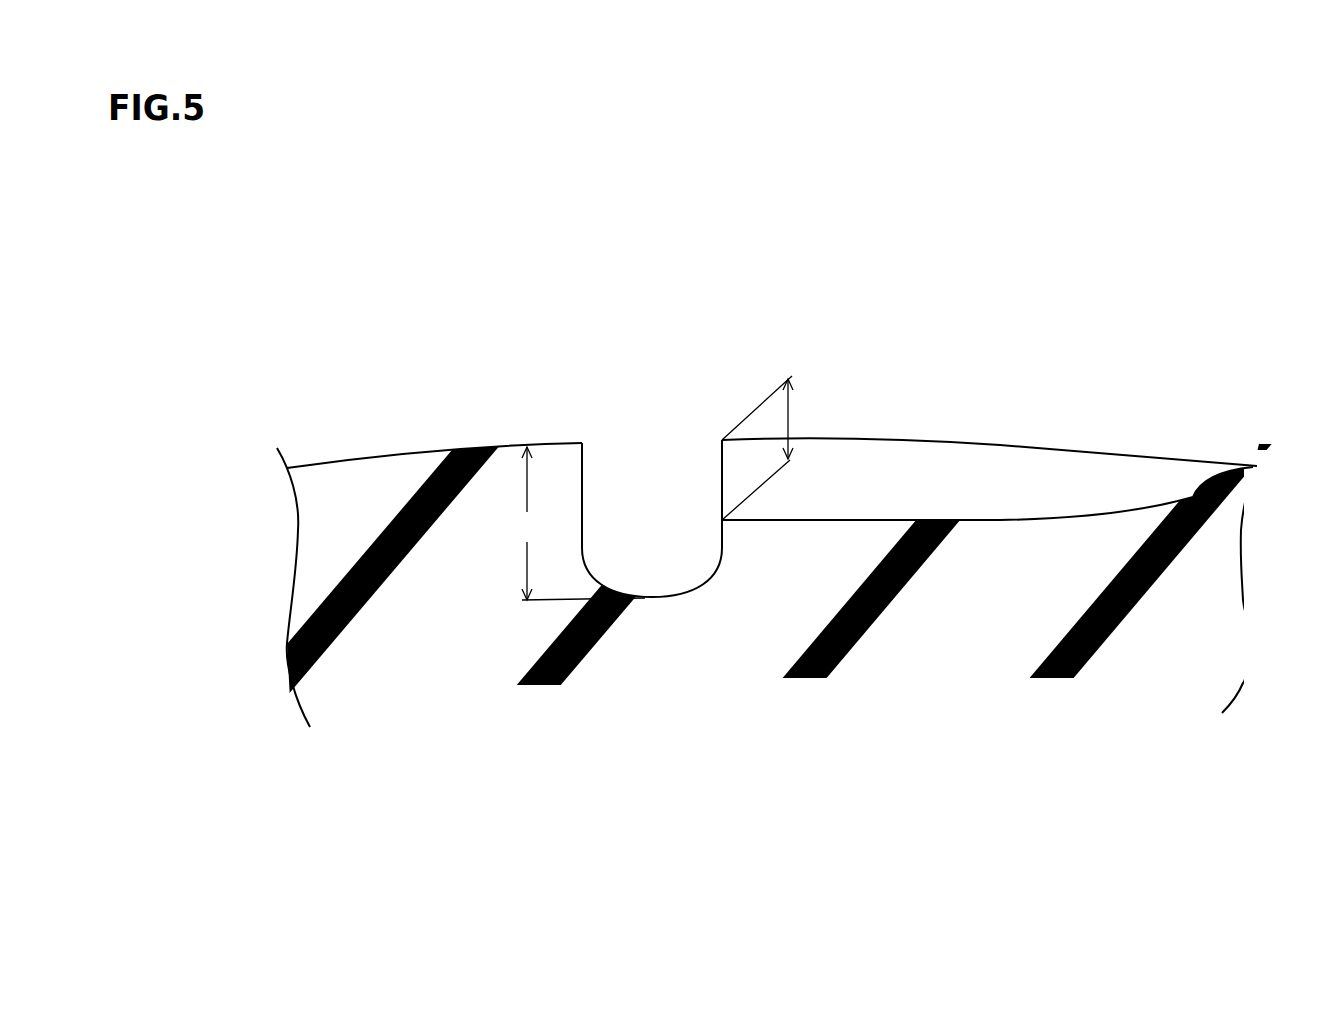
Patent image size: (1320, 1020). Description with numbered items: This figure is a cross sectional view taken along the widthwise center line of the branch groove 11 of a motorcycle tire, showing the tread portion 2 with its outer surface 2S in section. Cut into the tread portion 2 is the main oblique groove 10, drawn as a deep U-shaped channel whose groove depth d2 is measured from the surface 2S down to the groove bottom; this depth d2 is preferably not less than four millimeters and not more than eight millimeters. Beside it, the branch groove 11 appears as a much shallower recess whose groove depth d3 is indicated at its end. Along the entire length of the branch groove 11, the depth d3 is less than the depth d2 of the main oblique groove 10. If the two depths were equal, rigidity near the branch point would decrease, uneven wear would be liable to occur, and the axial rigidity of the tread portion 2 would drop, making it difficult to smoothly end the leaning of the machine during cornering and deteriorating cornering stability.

The tread portion 2 is at (1067, 422).
The tread surface 2S is at (378, 453).
The main oblique groove 10 is at (645, 507).
The branch groove 11 is at (907, 490).
The groove depth of the main oblique groove d2 is at (579, 523).
The groove depth of the branch groove d3 is at (775, 448).